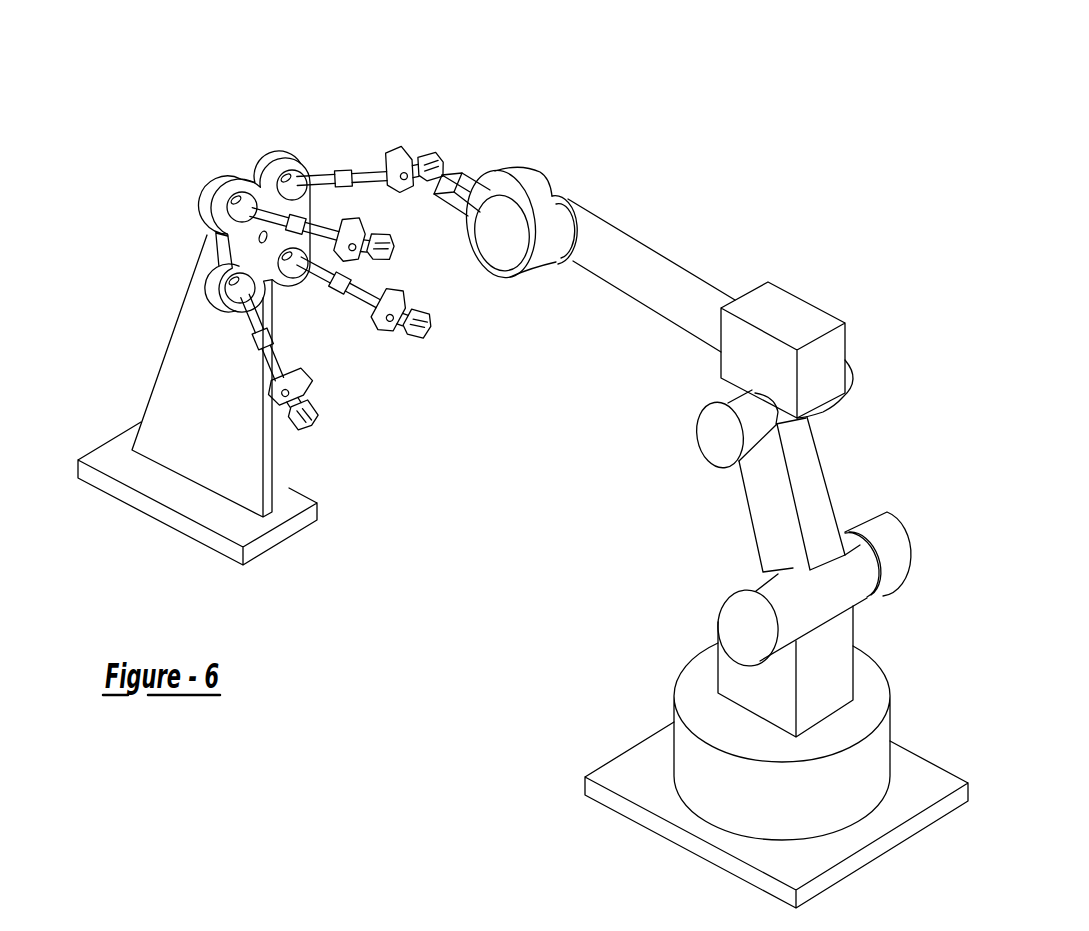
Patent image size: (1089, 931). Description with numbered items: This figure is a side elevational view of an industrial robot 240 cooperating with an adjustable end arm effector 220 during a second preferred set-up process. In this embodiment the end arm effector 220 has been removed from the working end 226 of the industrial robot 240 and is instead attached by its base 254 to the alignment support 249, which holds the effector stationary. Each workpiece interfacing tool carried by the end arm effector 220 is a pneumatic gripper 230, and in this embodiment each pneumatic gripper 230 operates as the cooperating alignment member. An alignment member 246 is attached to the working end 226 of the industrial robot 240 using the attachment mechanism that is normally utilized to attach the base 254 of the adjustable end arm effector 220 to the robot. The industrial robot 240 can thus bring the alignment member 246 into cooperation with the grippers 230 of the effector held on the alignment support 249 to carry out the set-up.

The end arm effector 220 is at (233, 136).
The base 254 is at (277, 152).
The pneumatic gripper 230 is at (428, 158).
The working end 226 is at (500, 170).
The alignment member 246 is at (444, 199).
The alignment support 249 is at (183, 362).
The industrial robot 240 is at (912, 418).